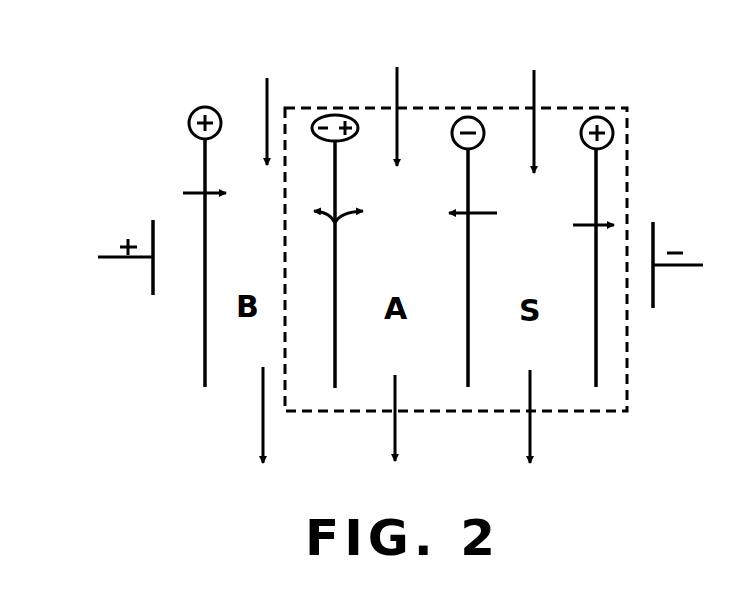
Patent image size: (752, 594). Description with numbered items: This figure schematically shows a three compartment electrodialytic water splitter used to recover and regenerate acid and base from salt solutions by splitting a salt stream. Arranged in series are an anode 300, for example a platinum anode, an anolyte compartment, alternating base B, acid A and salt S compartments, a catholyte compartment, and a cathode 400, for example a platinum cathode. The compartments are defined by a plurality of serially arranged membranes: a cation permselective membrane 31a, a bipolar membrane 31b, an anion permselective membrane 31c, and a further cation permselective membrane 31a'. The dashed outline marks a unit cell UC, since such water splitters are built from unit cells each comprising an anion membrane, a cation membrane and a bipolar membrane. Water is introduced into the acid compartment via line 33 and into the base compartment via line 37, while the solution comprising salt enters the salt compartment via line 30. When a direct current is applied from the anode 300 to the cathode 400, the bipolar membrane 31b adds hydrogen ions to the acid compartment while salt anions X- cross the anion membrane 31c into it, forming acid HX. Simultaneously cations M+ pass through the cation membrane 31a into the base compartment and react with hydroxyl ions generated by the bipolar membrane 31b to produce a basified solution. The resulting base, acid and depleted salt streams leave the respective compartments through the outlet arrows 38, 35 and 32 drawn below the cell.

The unit cell UC is at (562, 123).
The cation permselective membrane 31a is at (168, 247).
The bipolar membrane 31b is at (333, 382).
The anion permselective membrane 31c is at (467, 357).
The cation permselective membrane 31a' is at (575, 265).
The anode 300 is at (150, 222).
The cathode 400 is at (655, 230).
The water inlet to base compartment 37 is at (265, 98).
The water inlet to acid compartment 33 is at (397, 90).
The salt solution line 30 is at (532, 90).
The outlet from base compartment 38 is at (260, 418).
The outlet from acid compartment 35 is at (392, 433).
The outlet from salt compartment 32 is at (527, 435).